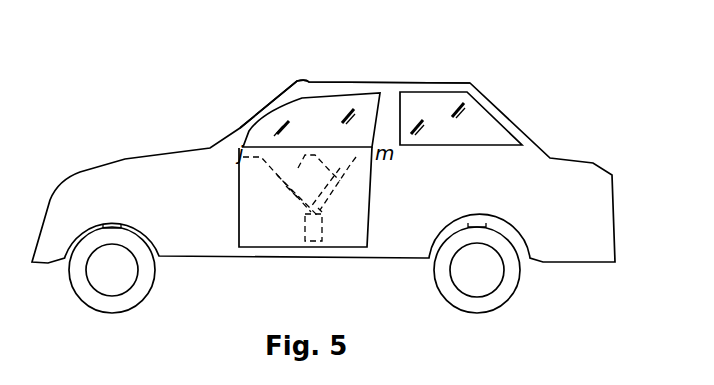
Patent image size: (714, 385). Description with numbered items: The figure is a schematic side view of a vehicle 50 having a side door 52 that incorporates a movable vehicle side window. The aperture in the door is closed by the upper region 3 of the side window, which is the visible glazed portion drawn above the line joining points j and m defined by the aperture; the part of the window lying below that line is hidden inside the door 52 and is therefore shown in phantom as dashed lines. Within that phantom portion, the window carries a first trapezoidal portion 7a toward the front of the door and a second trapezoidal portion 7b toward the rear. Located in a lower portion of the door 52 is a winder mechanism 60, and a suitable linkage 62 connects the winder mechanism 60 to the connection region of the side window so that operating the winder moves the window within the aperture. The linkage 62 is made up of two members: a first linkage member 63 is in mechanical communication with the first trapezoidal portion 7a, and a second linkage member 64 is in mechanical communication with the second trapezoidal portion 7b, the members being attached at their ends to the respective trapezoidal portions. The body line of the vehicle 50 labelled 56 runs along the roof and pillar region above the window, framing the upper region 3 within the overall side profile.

The vehicle 50 is at (192, 119).
The upper region 3 is at (327, 113).
The roof 56 is at (303, 100).
The side door 52 is at (263, 240).
The first trapezoidal portion 7a is at (272, 160).
The second trapezoidal portion 7b is at (356, 157).
The linkage 62 is at (343, 197).
The winder mechanism 60 is at (313, 220).
The first linkage member 63 is at (297, 196).
The second linkage member 64 is at (326, 201).